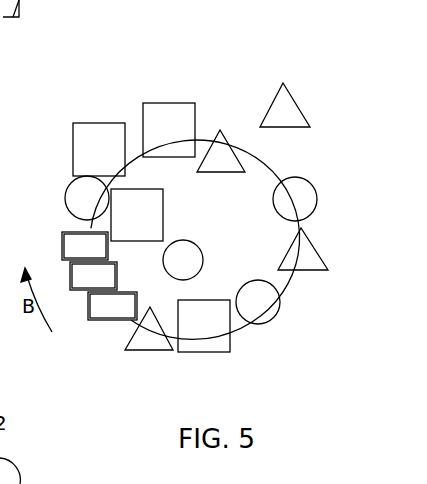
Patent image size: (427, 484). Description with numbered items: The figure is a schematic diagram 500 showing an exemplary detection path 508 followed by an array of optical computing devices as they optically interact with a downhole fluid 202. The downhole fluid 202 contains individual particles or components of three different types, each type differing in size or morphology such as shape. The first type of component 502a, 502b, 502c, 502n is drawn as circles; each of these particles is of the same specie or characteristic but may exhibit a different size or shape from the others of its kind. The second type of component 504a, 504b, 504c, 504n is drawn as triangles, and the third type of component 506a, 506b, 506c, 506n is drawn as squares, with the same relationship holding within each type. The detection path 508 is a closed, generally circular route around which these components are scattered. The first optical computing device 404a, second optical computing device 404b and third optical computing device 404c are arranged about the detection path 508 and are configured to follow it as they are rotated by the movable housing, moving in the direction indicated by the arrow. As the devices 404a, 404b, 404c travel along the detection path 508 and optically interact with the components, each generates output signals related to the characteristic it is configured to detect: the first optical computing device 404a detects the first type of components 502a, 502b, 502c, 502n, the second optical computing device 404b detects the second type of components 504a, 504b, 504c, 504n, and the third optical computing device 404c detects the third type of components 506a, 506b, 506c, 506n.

The schematic diagram 500 is at (364, 29).
The downhole fluid 202 is at (45, 156).
The detection path 508 is at (90, 228).
The third type of component 506a is at (97, 123).
The third type of component 506b is at (157, 103).
The third type of component 506c is at (230, 338).
The third type of component 506n is at (163, 200).
The first type of component 502a is at (66, 192).
The first type of component 502b is at (314, 186).
The first type of component 502c is at (279, 298).
The first type of component 502n is at (200, 250).
The second type of component 504a is at (220, 130).
The second type of component 504b is at (313, 242).
The second type of component 504c is at (140, 350).
The second type of component 504n is at (283, 83).
The first optical computing device 404a is at (104, 257).
The second optical computing device 404b is at (112, 287).
The third optical computing device 404c is at (132, 317).